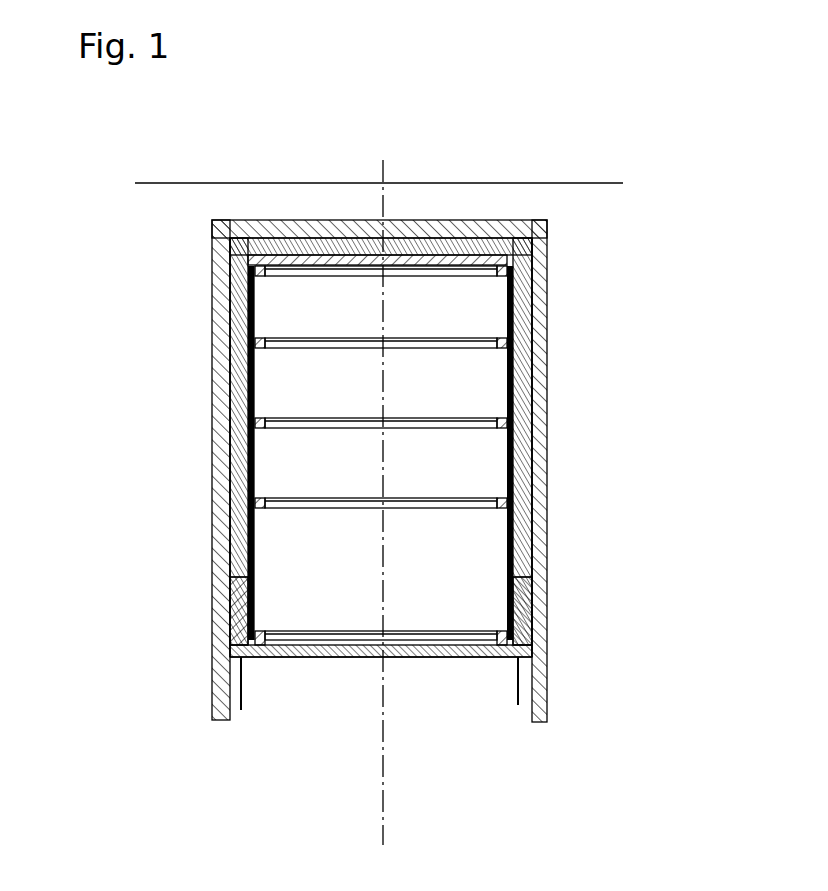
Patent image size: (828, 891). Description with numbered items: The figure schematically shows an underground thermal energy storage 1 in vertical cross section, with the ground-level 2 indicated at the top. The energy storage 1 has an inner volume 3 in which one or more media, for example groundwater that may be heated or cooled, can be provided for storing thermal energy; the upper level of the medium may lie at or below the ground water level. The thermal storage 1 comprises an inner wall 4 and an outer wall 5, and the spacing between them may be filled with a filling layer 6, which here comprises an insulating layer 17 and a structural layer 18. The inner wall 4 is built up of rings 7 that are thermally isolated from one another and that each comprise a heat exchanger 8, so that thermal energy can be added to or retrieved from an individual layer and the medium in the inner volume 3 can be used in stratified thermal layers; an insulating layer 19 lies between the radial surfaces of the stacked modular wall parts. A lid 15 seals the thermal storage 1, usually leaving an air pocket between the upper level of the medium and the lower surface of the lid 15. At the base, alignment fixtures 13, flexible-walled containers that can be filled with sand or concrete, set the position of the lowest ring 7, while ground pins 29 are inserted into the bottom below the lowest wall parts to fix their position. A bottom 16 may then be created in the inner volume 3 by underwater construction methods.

The underground thermal energy storage 1 is at (582, 278).
The ground-level 2 is at (561, 183).
The inner volume 3 is at (408, 303).
The inner wall 4 is at (252, 566).
The outer wall 5 is at (228, 598).
The filling layer 6 is at (230, 540).
The rings 7 is at (292, 461).
The heat exchangers 8 is at (514, 306).
The alignment fixtures 13 is at (493, 657).
The lid 15 is at (298, 262).
The bottom 16 is at (413, 657).
The insulating layer 17 is at (242, 287).
The structural layer 18 is at (240, 478).
The insulating layer 19 is at (508, 348).
The ground pins 29 is at (519, 705).